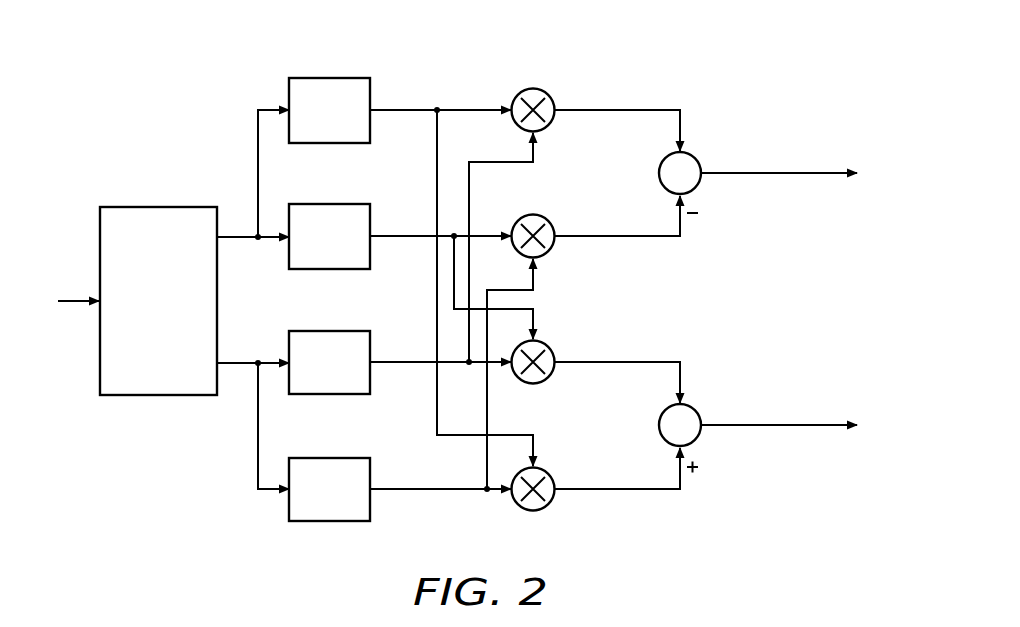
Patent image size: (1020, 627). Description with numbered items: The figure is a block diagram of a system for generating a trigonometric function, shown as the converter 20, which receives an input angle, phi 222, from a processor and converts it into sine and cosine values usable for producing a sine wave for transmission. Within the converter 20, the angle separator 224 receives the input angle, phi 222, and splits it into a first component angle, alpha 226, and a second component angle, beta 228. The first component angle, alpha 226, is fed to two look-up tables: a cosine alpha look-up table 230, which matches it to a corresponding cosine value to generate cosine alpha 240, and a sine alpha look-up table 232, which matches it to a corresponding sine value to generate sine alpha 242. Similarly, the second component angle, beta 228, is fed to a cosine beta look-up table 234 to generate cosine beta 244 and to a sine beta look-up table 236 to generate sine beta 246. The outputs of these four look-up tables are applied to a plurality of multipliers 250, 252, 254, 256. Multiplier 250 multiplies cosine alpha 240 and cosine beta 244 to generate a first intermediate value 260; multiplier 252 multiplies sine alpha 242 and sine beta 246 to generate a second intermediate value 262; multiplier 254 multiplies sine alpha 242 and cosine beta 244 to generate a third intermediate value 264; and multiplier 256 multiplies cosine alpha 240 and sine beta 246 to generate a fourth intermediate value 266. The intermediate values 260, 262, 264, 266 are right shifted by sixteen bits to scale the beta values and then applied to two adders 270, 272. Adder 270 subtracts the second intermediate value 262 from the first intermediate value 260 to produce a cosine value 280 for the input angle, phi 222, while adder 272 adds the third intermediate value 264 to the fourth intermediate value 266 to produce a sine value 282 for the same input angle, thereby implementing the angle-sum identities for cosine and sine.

The converter 20 is at (203, 76).
The input angle φ 222 is at (74, 297).
The angle separator 224 is at (178, 343).
The first component angle α 226 is at (237, 242).
The second component angle β 228 is at (237, 360).
The cosine α look-up table 230 is at (328, 77).
The sine α look-up table 232 is at (328, 203).
The cosine β look-up table 234 is at (330, 395).
The sine β look-up table 236 is at (330, 522).
The cosine α 240 is at (415, 112).
The sine α 242 is at (415, 238).
The cosine β 244 is at (415, 364).
The sine β 246 is at (415, 491).
The multiplier 250 is at (532, 88).
The multiplier 252 is at (548, 215).
The multiplier 254 is at (546, 380).
The multiplier 256 is at (536, 509).
The first intermediate value 260 is at (615, 112).
The second intermediate value 262 is at (615, 238).
The third intermediate value 264 is at (615, 364).
The fourth intermediate value 266 is at (615, 491).
The adder 270 is at (699, 186).
The adder 272 is at (699, 438).
The cosine value 280 is at (817, 176).
The sine value 282 is at (817, 428).